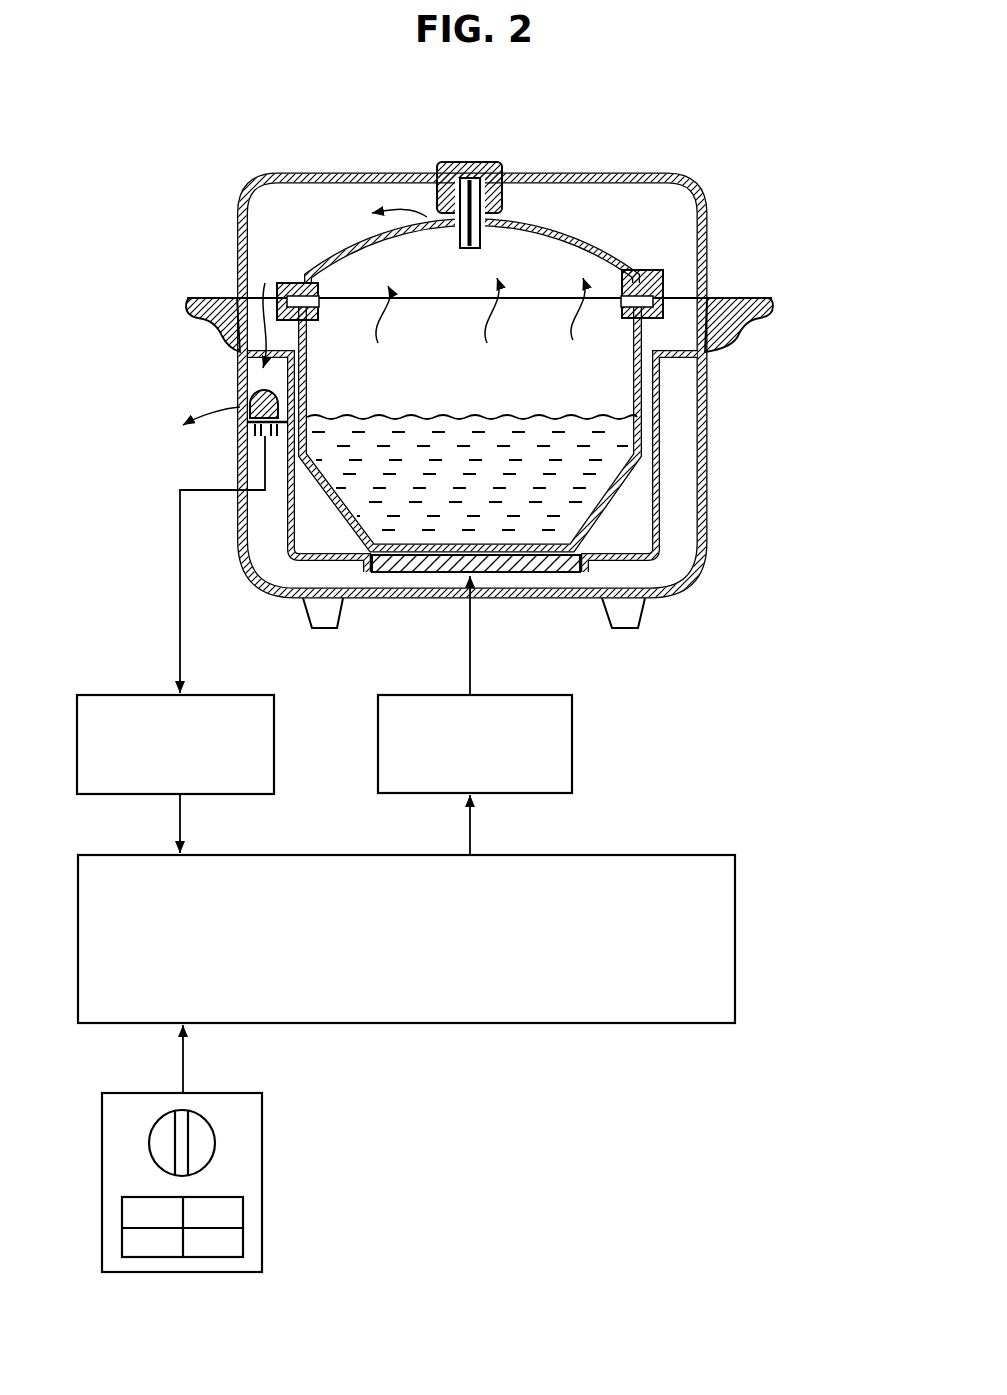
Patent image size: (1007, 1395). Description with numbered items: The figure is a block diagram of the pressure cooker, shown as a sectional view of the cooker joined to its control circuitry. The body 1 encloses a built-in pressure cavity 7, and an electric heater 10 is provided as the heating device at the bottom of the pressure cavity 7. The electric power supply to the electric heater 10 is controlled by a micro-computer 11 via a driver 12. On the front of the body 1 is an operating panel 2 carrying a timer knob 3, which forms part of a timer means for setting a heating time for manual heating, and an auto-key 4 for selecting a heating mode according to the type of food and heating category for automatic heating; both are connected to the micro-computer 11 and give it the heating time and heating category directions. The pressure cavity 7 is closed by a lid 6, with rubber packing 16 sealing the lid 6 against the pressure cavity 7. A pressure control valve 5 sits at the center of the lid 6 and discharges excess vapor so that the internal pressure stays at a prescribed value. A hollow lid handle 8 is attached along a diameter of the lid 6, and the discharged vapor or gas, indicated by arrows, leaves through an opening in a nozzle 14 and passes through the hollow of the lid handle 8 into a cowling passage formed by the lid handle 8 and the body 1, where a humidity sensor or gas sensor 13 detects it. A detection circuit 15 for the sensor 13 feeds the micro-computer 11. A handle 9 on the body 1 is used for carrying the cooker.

The body 1 is at (695, 577).
The operating panel 2 is at (253, 1150).
The timer knob 3 is at (168, 1121).
The auto-key 4 is at (243, 1233).
The pressure control valve 5 is at (488, 163).
The lid 6 is at (557, 228).
The pressure cavity 7 is at (635, 492).
The lid handle 8 is at (663, 173).
The handle 9 is at (738, 302).
The electric heater 10 is at (407, 563).
The micro-computer 11 is at (708, 872).
The driver 12 is at (562, 727).
The humidity sensor or gas sensor 13 is at (250, 393).
The nozzle 14 is at (443, 163).
The detection circuit 15 is at (95, 695).
The packing 16 is at (297, 265).